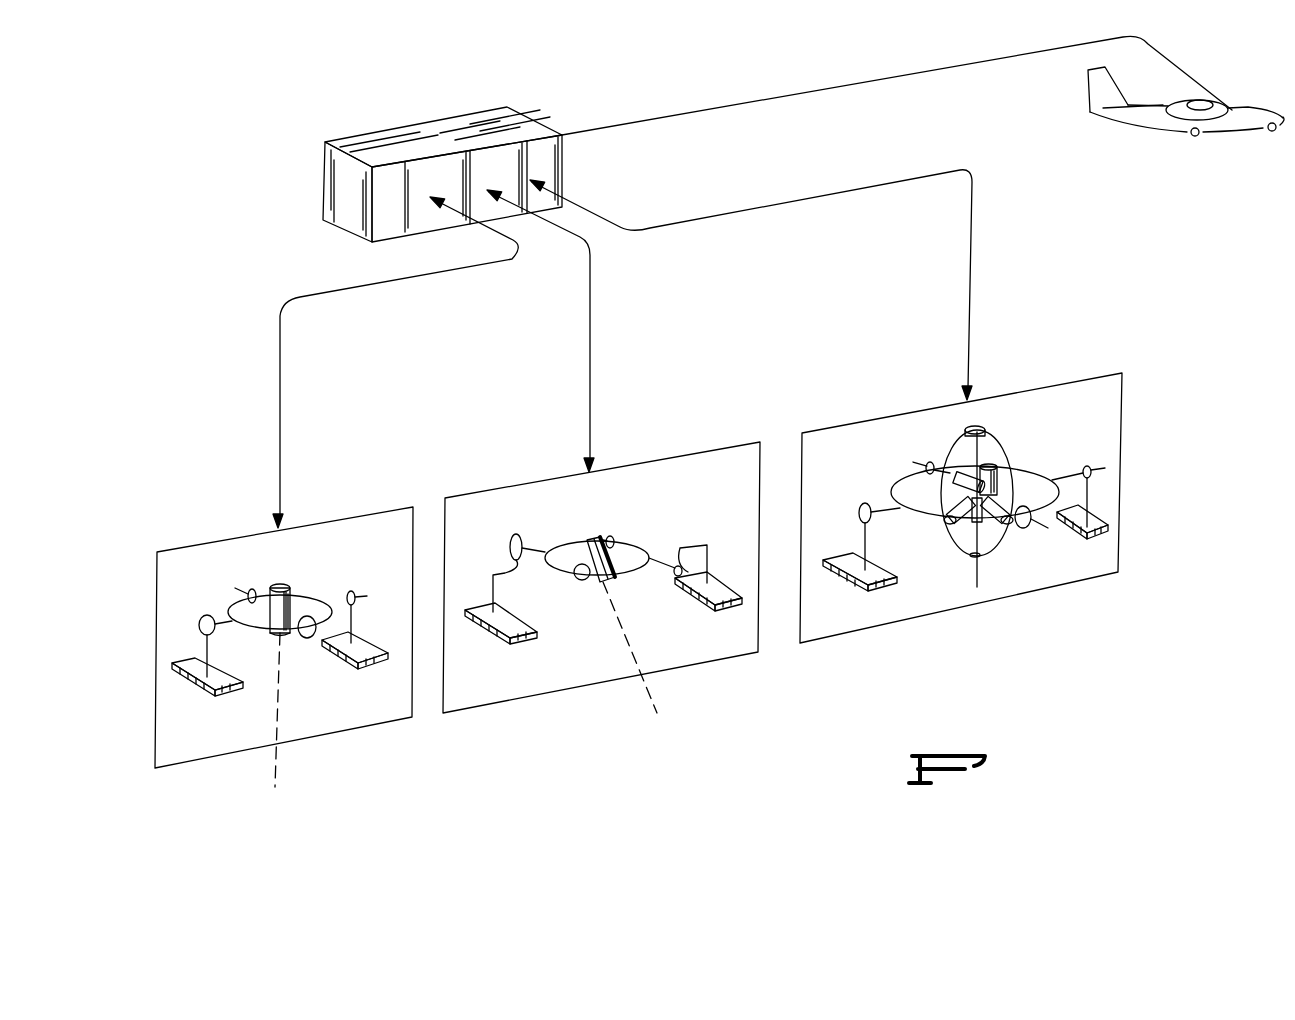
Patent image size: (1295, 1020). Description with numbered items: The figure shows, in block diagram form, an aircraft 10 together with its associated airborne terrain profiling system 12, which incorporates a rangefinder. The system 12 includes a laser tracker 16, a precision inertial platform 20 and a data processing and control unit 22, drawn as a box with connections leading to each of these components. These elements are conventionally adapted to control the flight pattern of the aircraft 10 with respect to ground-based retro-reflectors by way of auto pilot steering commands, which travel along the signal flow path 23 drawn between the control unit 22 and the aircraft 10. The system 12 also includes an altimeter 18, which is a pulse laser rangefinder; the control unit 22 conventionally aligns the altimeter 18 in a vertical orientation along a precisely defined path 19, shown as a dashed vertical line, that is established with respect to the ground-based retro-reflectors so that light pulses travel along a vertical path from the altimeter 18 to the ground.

The aircraft 10 is at (1250, 110).
The airborne terrain profiling system 12 is at (203, 371).
The laser tracker 16 is at (492, 490).
The altimeter 18 is at (220, 540).
The precisely defined path 19 is at (278, 760).
The precision inertial platform 20 is at (850, 423).
The data processing and control unit 22 is at (335, 190).
The signal flow path 23 is at (676, 117).